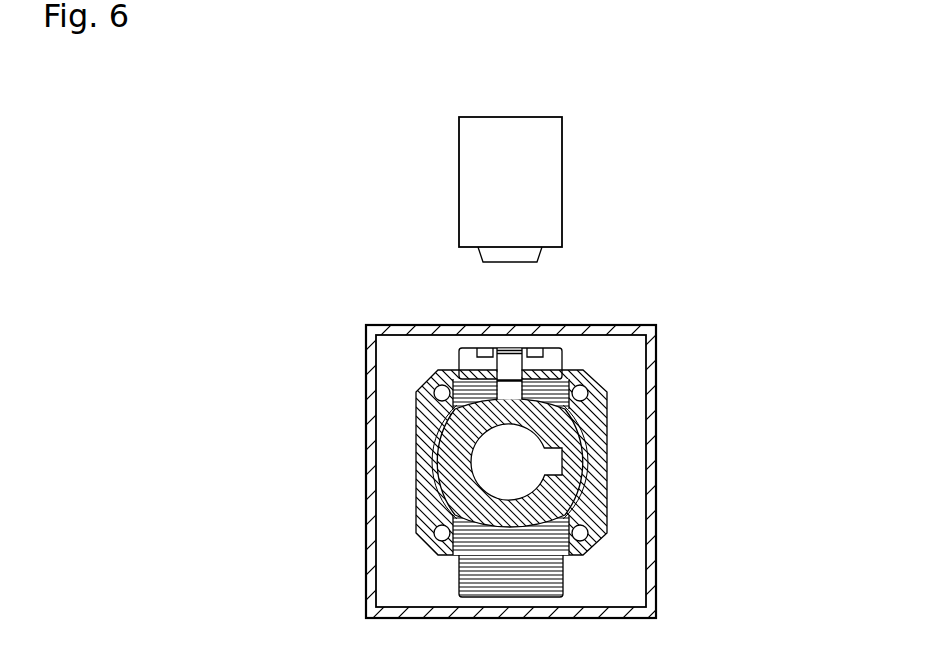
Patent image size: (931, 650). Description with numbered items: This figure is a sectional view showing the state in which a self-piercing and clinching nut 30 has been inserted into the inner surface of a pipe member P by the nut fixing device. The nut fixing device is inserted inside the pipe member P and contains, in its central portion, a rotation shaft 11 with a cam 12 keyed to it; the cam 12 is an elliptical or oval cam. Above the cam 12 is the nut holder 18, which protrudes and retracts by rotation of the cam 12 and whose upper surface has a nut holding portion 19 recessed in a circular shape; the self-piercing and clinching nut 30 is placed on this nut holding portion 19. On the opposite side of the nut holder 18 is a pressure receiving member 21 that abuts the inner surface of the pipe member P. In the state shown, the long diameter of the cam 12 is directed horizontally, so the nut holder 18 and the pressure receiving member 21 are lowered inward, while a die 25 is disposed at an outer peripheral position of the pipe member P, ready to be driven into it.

The pipe member P is at (367, 345).
The nut holder 18 is at (557, 392).
The cam 12 is at (455, 453).
The rotation shaft 11 is at (502, 483).
The self-piercing and clinching nut 30 is at (467, 360).
The nut holding portion 19 is at (545, 377).
The pressure receiving member 21 is at (552, 582).
The die 25 is at (458, 167).